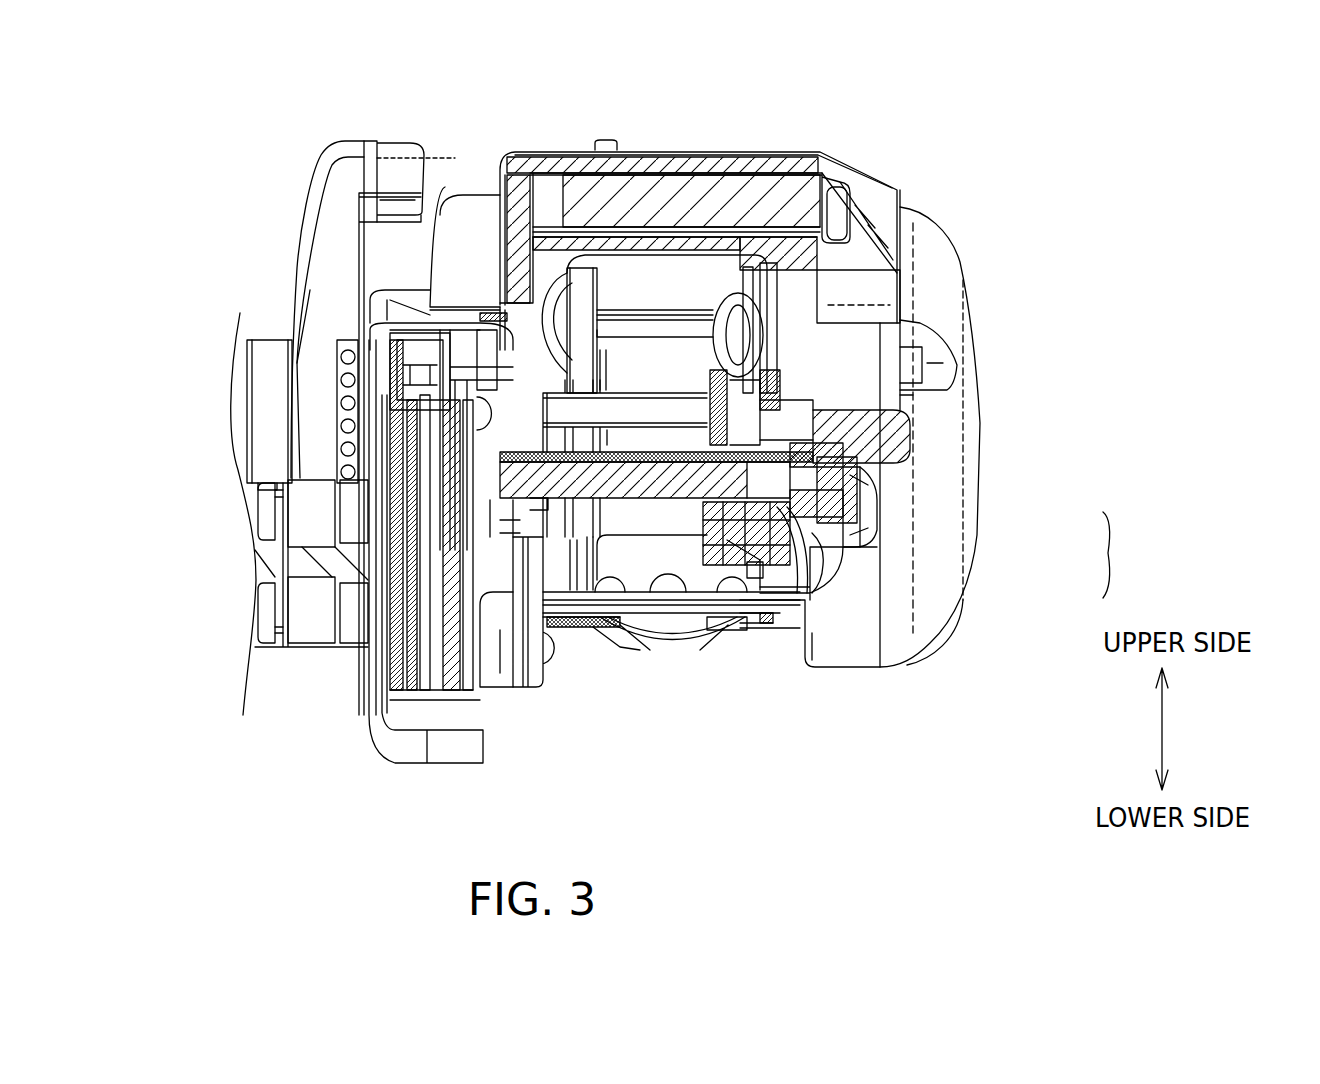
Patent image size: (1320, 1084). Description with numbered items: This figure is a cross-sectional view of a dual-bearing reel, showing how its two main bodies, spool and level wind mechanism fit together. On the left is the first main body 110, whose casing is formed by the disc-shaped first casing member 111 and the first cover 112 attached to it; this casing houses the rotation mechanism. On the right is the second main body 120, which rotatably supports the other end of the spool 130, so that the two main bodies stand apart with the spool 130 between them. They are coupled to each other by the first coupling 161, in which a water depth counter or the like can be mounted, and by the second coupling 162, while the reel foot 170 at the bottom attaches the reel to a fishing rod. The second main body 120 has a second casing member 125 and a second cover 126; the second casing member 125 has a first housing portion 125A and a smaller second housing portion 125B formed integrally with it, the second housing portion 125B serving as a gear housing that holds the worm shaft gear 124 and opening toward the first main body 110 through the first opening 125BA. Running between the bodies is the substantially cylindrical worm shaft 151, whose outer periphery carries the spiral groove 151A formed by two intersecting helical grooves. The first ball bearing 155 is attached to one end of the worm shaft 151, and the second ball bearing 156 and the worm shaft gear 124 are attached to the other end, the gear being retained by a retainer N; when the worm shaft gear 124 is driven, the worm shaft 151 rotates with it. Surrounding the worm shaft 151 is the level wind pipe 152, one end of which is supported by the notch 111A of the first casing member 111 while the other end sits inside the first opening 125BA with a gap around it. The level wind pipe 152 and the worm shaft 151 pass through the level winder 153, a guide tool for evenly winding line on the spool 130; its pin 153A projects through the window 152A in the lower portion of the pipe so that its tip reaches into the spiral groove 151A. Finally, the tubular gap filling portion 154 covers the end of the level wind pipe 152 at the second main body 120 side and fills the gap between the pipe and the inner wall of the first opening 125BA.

The first main body 110 is at (311, 724).
The first casing member 111 is at (430, 372).
The notch 111A is at (522, 633).
The first cover 112 is at (462, 333).
The second main body 120 is at (975, 686).
The worm shaft gear 124 is at (870, 457).
The second casing member 125 is at (1132, 555).
The first housing portion 125A is at (867, 563).
The second housing portion 125B is at (860, 515).
The first opening 125BA is at (850, 425).
The second cover 126 is at (885, 403).
The spool 130 is at (673, 343).
The worm shaft 151 is at (663, 497).
The spiral groove 151A is at (840, 365).
The level wind pipe 152 is at (633, 450).
The window 152A is at (593, 545).
The level winder 153 is at (880, 300).
The pin 153A is at (733, 552).
The gap filling portion 154 is at (870, 443).
The first ball bearing 155 is at (505, 472).
The second ball bearing 156 is at (872, 508).
The first coupling 161 is at (783, 320).
The second coupling 162 is at (580, 620).
The reel foot 170 is at (672, 630).
The retainer N is at (880, 477).